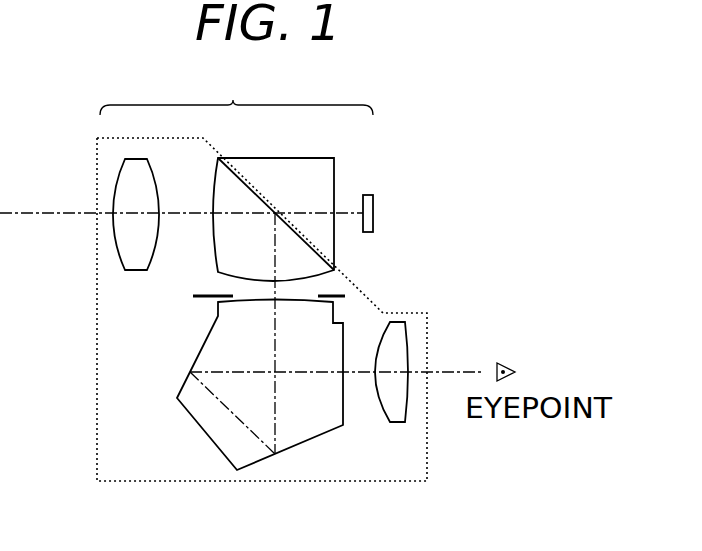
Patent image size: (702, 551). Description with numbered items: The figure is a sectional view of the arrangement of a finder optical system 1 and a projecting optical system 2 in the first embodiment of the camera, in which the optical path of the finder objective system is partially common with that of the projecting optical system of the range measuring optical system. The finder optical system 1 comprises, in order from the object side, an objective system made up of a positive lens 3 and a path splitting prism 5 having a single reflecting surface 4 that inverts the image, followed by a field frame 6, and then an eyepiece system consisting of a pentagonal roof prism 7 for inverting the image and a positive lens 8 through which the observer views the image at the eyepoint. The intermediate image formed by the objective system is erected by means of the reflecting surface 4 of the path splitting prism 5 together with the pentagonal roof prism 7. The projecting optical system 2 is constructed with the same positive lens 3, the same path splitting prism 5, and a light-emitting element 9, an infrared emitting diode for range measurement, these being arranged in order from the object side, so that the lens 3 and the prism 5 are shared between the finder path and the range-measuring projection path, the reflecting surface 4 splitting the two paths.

The finder optical system 1 is at (97, 372).
The projecting optical system 2 is at (236, 92).
The positive lens 3 is at (126, 244).
The reflecting surface 4 is at (242, 177).
The path splitting prism 5 is at (322, 173).
The field frame 6 is at (345, 296).
The pentagonal roof prism 7 is at (310, 432).
The positive lens 8 is at (400, 345).
The light-emitting element 9 is at (368, 205).